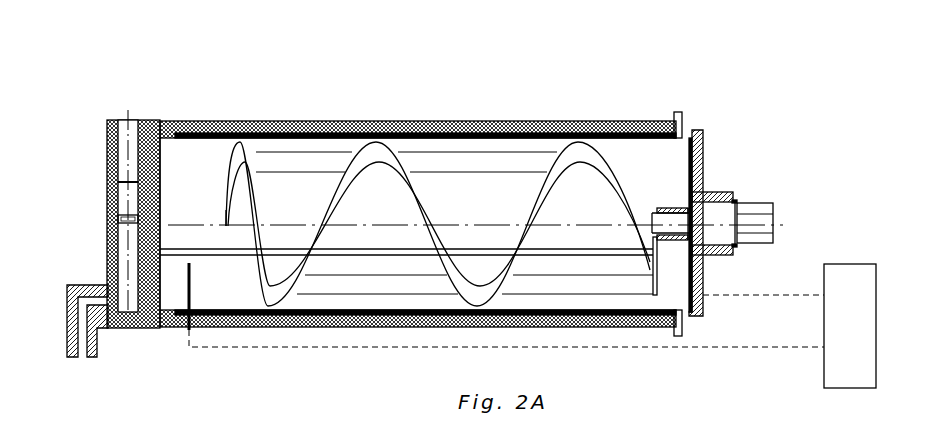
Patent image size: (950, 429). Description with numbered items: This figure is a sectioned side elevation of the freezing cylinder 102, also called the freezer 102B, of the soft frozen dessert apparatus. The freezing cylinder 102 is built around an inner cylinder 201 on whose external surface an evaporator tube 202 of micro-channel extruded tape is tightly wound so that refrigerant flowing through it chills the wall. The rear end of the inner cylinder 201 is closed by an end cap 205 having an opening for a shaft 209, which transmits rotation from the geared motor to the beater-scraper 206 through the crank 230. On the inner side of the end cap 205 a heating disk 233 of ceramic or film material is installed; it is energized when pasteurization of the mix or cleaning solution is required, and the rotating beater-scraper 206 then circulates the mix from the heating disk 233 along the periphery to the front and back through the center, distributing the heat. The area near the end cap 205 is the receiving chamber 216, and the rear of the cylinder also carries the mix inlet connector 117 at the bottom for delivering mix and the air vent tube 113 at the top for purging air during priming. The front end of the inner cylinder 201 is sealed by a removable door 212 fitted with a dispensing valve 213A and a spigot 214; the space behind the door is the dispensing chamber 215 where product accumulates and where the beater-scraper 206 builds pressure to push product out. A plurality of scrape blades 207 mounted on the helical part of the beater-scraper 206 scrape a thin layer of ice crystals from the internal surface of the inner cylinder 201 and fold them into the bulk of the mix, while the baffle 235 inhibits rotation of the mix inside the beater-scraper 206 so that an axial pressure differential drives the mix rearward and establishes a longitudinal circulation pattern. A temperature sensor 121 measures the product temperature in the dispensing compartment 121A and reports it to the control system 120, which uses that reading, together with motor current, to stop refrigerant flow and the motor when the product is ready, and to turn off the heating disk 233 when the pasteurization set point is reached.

The freezing cylinder 102 is at (415, 92).
The freezer 102B is at (435, 110).
The air vent tube 113 is at (682, 112).
The mix inlet connector 117 is at (672, 330).
The control system 120 is at (865, 285).
The temperature sensor 121 is at (188, 330).
The dispensing compartment 121A is at (180, 285).
The inner cylinder 201 is at (217, 323).
The evaporator tube 202 is at (307, 325).
The end cap 205 is at (703, 178).
The beater-scraper 206 is at (483, 293).
The scrape blades 207 is at (276, 162).
The shaft 209 is at (720, 237).
The removable door 212 is at (107, 243).
The dispensing valve 213A is at (126, 193).
The spigot 214 is at (100, 345).
The dispensing chamber 215 is at (183, 158).
The receiving chamber 216 is at (672, 176).
The crank 230 is at (657, 265).
The heating disk 233 is at (702, 173).
The baffle 235 is at (408, 258).